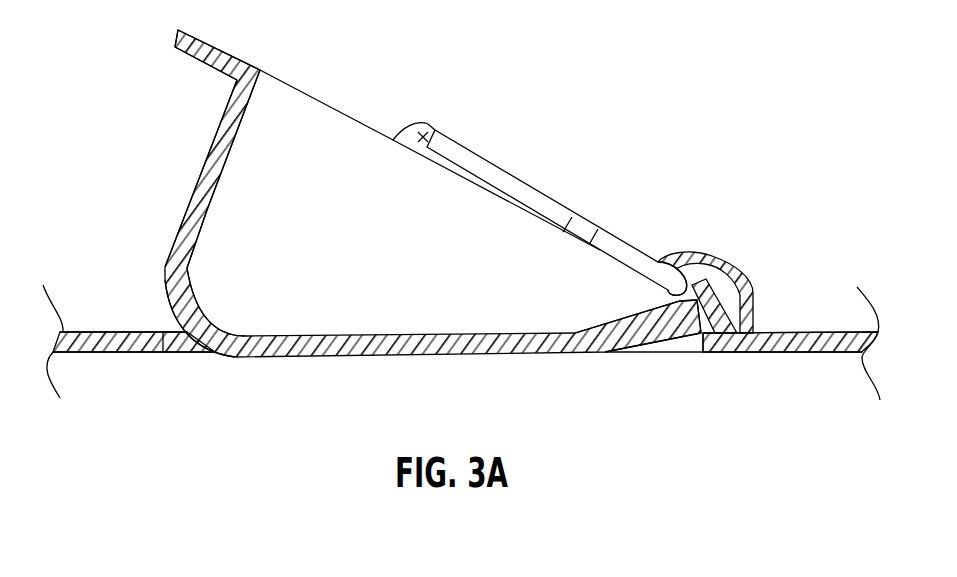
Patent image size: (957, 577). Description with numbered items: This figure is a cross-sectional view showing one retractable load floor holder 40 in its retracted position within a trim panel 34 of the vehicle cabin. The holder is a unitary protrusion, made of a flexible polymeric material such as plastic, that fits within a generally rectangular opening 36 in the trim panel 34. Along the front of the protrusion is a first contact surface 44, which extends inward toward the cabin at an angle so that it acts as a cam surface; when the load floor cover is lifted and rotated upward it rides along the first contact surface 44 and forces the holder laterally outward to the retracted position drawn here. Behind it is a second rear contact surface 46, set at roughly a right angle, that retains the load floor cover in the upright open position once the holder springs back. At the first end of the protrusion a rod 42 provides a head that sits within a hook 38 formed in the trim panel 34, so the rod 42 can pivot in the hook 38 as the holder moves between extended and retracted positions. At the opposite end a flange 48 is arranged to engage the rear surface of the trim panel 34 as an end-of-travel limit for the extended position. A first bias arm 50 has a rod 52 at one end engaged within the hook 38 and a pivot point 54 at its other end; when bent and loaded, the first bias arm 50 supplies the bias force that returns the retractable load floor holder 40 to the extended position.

The trim panel 34 is at (792, 332).
The opening 36 is at (673, 340).
The hook 38 is at (658, 258).
The retractable load floor holder 40 is at (212, 366).
The rod 42 is at (718, 298).
The first contact surface 44 is at (273, 357).
The second rear contact surface 46 is at (201, 172).
The flange 48 is at (188, 54).
The first bias arm 50 is at (492, 163).
The rod 52 is at (679, 278).
The pivot point 54 is at (433, 124).